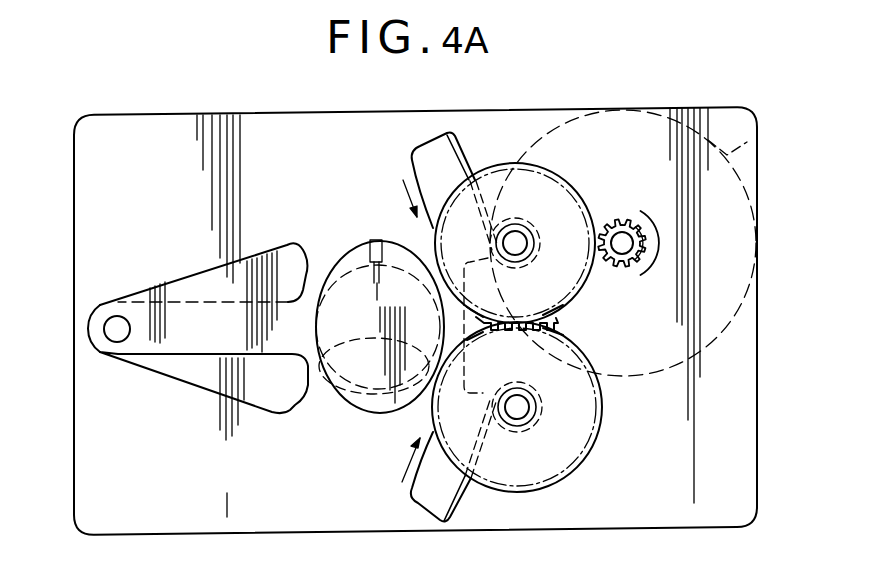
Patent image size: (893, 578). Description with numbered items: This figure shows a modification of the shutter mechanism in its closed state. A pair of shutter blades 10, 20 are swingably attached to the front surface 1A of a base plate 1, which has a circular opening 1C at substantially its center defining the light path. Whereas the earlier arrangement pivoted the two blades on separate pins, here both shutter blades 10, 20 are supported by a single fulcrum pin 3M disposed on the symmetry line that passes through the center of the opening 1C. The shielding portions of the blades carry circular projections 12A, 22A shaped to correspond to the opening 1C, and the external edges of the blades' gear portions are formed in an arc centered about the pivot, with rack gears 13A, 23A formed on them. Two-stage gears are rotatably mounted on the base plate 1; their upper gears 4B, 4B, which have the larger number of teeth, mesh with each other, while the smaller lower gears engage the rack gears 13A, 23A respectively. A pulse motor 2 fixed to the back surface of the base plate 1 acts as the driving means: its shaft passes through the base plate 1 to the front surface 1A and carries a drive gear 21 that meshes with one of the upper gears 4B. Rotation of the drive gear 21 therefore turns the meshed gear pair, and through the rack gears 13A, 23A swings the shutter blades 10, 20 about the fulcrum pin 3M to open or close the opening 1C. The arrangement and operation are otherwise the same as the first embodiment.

The base plate 1 is at (76, 281).
The front surface 1A is at (92, 223).
The circular opening 1C is at (333, 365).
The pulse motor 2 is at (633, 243).
The fulcrum pin 3M is at (92, 330).
The upper gear 4B is at (600, 283).
The shutter blade 10 is at (202, 267).
The circular projection 12A is at (370, 415).
The rack gear 13A is at (455, 145).
The shutter blade 20 is at (241, 397).
The drive gear 21 is at (630, 219).
The circular projection 22A is at (368, 240).
The rack gear 23A is at (467, 498).